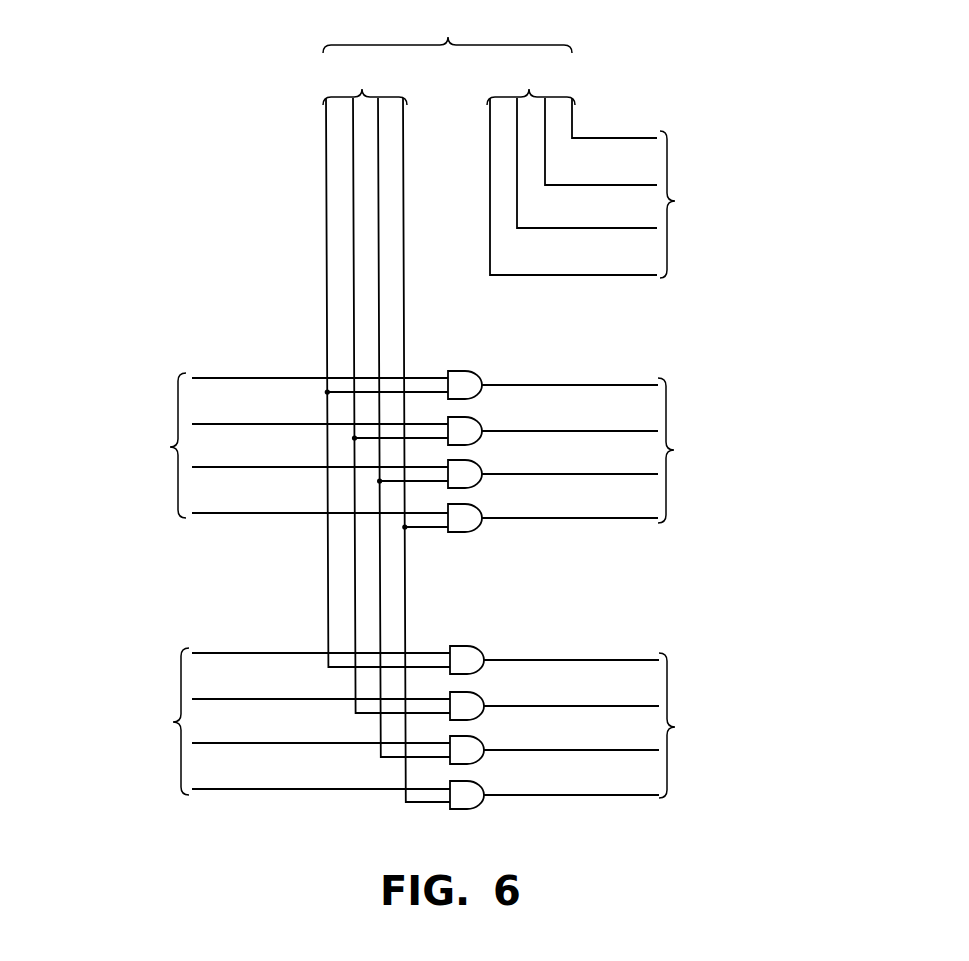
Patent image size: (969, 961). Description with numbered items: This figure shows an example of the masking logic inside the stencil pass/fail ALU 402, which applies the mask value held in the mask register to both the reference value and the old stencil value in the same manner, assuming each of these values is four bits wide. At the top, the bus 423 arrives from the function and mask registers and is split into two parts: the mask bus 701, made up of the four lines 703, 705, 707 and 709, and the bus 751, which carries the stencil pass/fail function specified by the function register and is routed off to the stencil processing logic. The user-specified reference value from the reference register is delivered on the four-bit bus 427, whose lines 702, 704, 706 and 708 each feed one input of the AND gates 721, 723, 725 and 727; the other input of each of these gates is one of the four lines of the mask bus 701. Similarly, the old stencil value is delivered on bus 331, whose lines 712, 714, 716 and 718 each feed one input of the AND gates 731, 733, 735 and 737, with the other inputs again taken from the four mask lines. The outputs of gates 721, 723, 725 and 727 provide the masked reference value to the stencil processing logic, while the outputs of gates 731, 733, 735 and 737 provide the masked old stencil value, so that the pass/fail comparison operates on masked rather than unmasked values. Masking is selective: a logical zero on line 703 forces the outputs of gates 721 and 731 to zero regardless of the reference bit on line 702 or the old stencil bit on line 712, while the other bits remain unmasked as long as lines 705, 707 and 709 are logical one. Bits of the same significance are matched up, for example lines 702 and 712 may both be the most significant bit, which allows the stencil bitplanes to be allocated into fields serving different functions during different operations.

The stencil pass/fail ALU 402 is at (694, 91).
The bus 423 is at (463, 407).
The mask bus 701 is at (365, 433).
The bus 751 is at (572, 170).
The line 703 is at (327, 158).
The line 705 is at (354, 227).
The line 707 is at (380, 238).
The line 709 is at (404, 283).
The bus 427 is at (175, 447).
The line 702 is at (282, 378).
The line 704 is at (247, 423).
The line 706 is at (224, 468).
The line 708 is at (283, 513).
The AND gate 721 is at (480, 375).
The AND gate 723 is at (481, 421).
The AND gate 725 is at (481, 465).
The AND gate 727 is at (481, 508).
The bus 331 is at (177, 722).
The line 712 is at (285, 652).
The line 714 is at (238, 698).
The line 716 is at (268, 744).
The line 718 is at (366, 790).
The AND gate 731 is at (483, 648).
The AND gate 733 is at (483, 695).
The AND gate 735 is at (483, 738).
The AND gate 737 is at (483, 783).